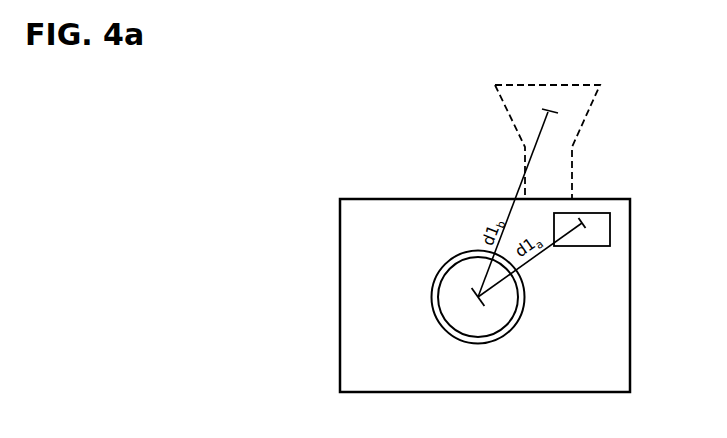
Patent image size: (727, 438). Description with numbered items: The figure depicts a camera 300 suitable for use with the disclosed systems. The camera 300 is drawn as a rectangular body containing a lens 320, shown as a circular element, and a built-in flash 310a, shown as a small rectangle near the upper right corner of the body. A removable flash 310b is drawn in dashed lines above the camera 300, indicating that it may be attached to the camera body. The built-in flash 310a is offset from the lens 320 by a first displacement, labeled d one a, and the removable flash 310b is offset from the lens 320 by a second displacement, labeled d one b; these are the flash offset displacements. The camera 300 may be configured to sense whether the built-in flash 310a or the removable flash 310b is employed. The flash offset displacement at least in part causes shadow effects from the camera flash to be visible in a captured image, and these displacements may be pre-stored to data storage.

The camera 300 is at (405, 199).
The built-in flash 310a is at (600, 207).
The removable flash 310b is at (580, 83).
The lens 320 is at (433, 312).